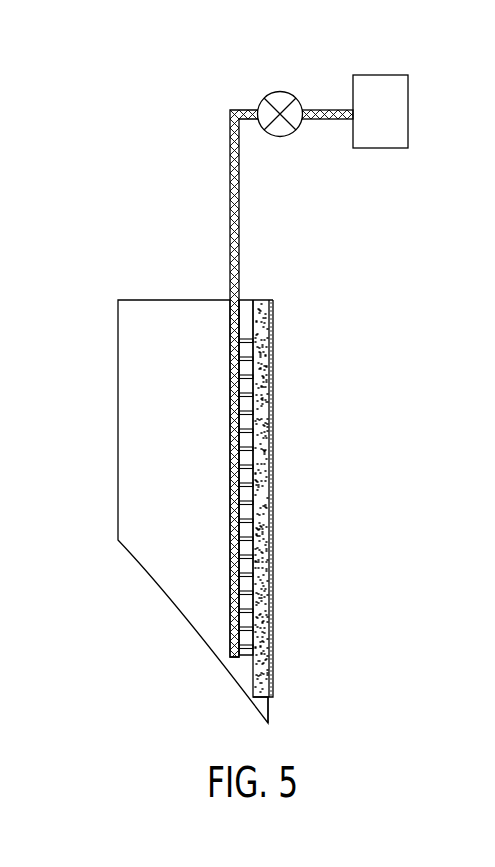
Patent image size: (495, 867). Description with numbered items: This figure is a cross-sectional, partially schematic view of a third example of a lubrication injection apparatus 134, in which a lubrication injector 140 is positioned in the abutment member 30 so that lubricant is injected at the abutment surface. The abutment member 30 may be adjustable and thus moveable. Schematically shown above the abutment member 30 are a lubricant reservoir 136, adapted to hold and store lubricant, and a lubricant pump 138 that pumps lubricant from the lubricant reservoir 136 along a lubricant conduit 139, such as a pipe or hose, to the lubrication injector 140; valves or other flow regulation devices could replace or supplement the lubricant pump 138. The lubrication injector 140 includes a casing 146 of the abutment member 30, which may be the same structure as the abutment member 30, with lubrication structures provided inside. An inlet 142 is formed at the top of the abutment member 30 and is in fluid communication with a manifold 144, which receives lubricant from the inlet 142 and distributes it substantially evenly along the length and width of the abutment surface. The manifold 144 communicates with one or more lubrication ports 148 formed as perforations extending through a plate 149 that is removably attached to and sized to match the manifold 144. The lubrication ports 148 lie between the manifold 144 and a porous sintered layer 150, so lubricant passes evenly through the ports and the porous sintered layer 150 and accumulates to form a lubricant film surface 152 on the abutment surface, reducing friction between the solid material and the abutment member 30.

The abutment member 30 is at (143, 220).
The lubrication injection apparatus 134 is at (205, 72).
The lubricant reservoir 136 is at (408, 110).
The lubricant pump 138 is at (283, 137).
The lubricant conduit 139 is at (240, 208).
The lubrication injector 140 is at (93, 387).
The inlet 142 is at (239, 298).
The manifold 144 is at (228, 560).
The casing 146 is at (118, 430).
The lubrication ports 148 is at (245, 337).
The plate 149 is at (248, 407).
The porous sintered layer 150 is at (262, 697).
The lubricant film surface 152 is at (273, 553).